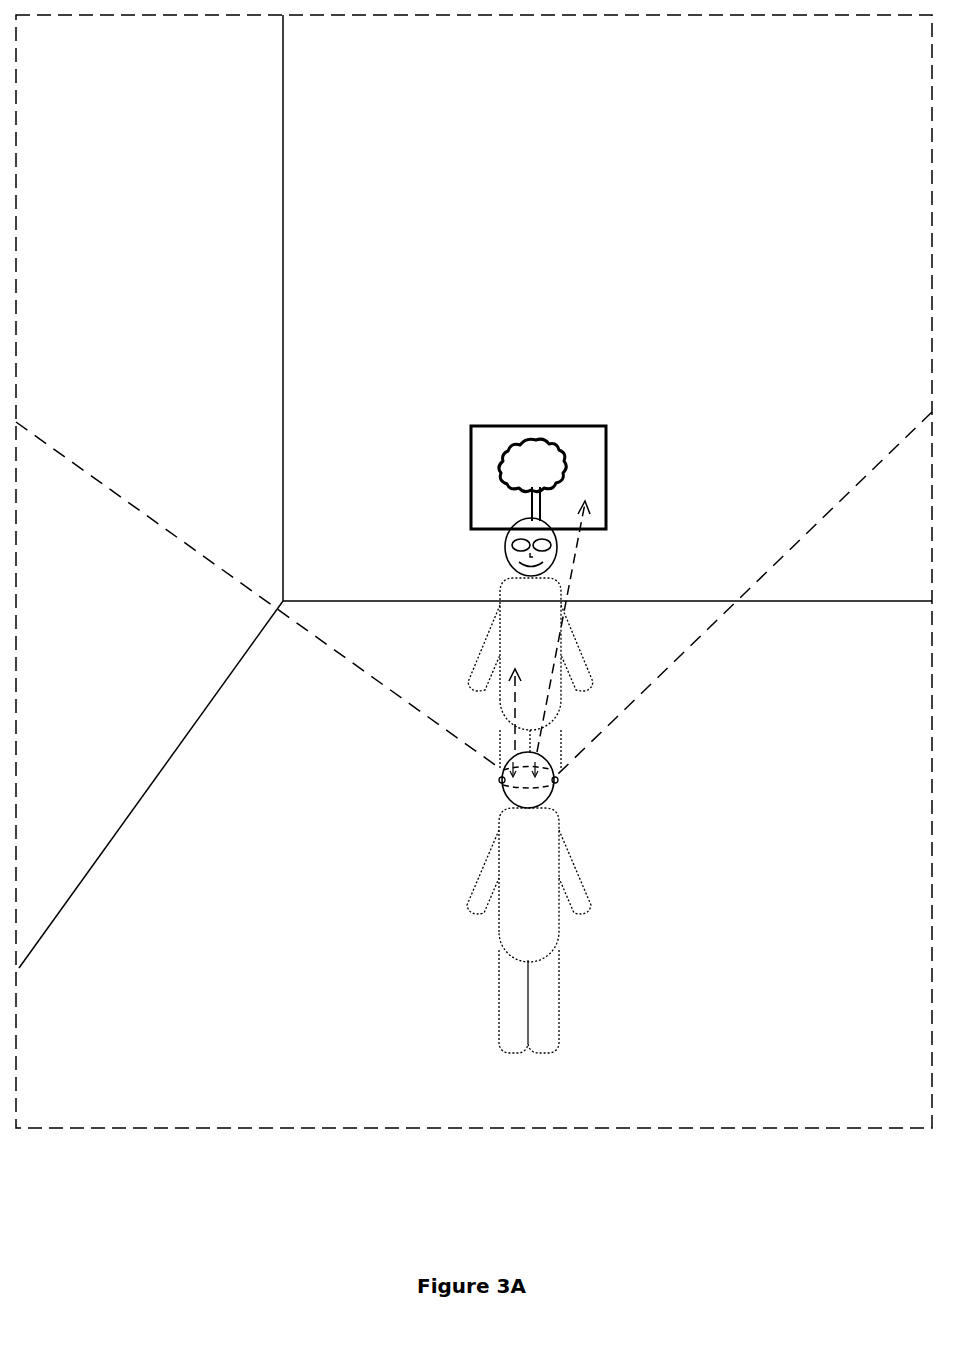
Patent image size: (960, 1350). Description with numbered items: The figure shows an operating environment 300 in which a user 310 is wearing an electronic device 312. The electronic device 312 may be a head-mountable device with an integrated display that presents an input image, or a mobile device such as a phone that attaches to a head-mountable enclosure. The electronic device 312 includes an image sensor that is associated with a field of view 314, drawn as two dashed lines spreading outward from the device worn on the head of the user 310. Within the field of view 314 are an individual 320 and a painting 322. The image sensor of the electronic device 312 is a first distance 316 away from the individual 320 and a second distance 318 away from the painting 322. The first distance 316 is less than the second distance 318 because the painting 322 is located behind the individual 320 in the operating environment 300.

The operating environment 300 is at (928, 36).
The user 310 is at (545, 1053).
The electronic device 312 is at (514, 786).
The field of view 314 is at (660, 672).
The first distance 316 is at (513, 697).
The second distance 318 is at (580, 539).
The individual 320 is at (486, 633).
The painting 322 is at (470, 476).